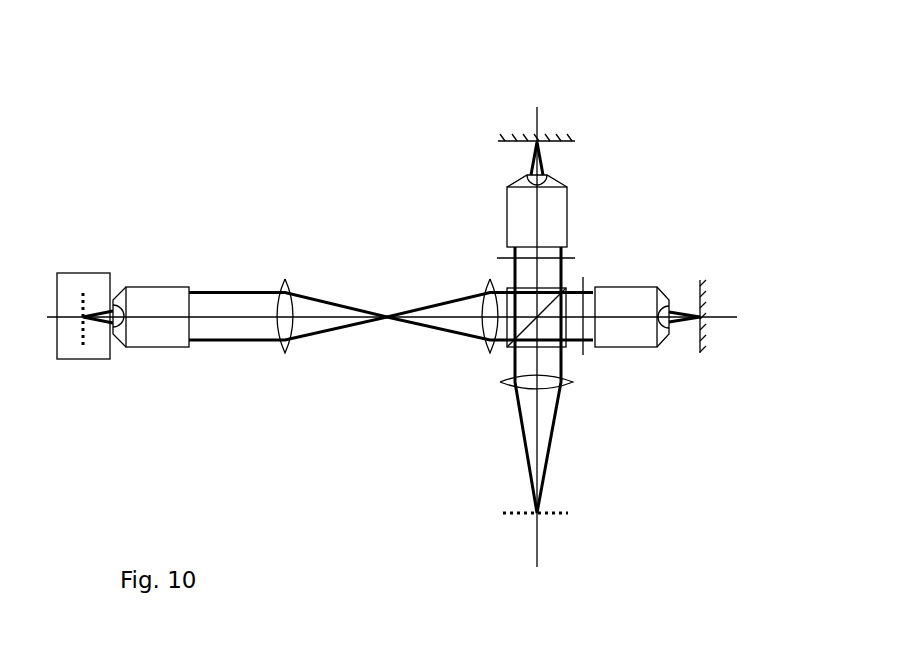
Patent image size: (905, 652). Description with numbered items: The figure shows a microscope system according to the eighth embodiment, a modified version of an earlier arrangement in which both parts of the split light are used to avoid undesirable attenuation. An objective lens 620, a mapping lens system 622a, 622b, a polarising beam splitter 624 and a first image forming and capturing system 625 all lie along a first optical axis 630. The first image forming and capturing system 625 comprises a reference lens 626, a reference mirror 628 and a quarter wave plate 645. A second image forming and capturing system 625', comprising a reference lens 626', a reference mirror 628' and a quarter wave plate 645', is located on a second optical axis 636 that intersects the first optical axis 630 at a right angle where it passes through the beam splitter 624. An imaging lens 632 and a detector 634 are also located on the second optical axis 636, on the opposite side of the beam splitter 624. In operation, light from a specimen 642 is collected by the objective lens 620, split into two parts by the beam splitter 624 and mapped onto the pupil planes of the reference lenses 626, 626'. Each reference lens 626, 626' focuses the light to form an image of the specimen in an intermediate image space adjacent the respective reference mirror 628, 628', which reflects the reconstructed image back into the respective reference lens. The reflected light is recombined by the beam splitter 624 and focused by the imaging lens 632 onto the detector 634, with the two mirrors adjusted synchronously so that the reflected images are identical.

The objective lens 620 is at (148, 290).
The mapping lens system 622a is at (286, 282).
The mapping lens system 622b is at (490, 282).
The polarising beam splitter 624 is at (527, 347).
The first image forming and capturing system 625 is at (790, 210).
The second image forming and capturing system 625' is at (742, 93).
The reference lens 626 is at (693, 362).
The reference lens 626' is at (467, 155).
The reference mirror 628 is at (782, 308).
The reference mirror 628' is at (482, 78).
The first optical axis 630 is at (240, 318).
The imaging lens 632 is at (515, 390).
The detector 634 is at (523, 518).
The second optical axis 636 is at (575, 81).
The specimen 642 is at (68, 353).
The quarter wave plate 645 is at (645, 377).
The quarter wave plate 645' is at (591, 227).